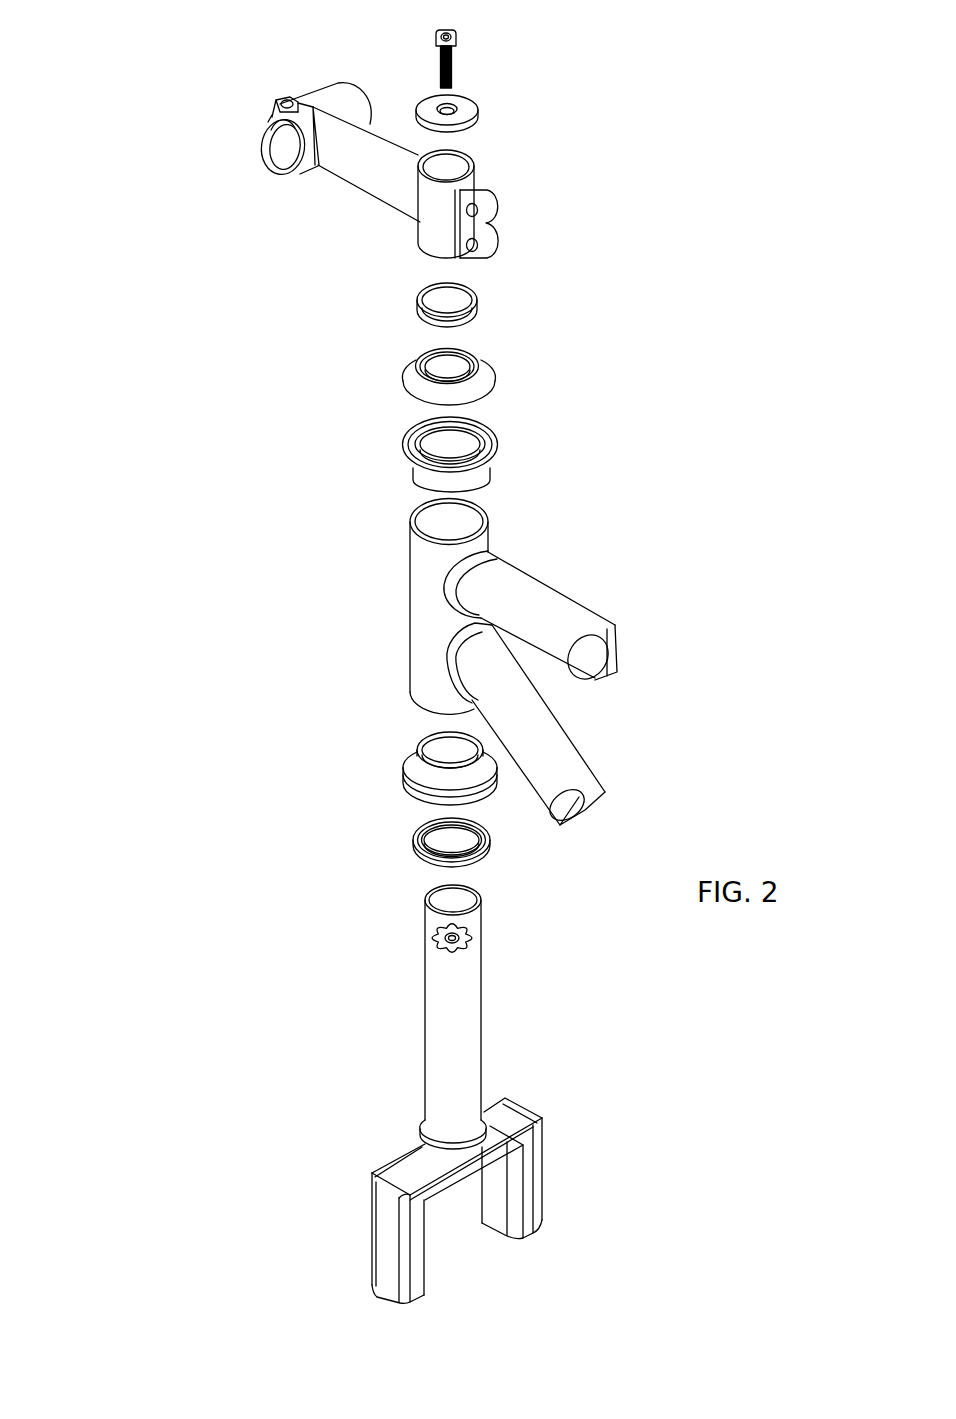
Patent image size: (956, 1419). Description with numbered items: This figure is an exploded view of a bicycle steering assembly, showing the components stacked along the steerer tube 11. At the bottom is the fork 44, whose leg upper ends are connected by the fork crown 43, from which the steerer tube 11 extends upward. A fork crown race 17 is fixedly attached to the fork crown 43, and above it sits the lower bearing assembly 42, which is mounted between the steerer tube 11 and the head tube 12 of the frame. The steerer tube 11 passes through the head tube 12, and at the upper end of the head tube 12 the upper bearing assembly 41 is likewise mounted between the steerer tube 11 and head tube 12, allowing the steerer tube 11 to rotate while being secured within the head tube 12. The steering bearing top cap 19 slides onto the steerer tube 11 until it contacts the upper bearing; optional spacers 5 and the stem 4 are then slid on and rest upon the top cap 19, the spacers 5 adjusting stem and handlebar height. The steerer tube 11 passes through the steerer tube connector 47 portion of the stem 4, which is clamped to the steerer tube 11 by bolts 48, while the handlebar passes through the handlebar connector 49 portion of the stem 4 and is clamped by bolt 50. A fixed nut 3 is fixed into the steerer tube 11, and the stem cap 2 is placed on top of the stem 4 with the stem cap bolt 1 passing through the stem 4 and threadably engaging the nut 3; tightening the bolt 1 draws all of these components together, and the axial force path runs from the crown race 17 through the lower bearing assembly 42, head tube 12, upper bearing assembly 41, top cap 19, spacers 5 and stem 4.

The stem cap bolt 1 is at (441, 52).
The stem cap 2 is at (420, 108).
The fixed nut 3 is at (440, 947).
The stem 4 is at (379, 147).
The spacers 5 is at (413, 308).
The steerer tube 11 is at (447, 1045).
The head tube 12 is at (422, 627).
The fork crown race 17 is at (417, 855).
The steering bearing top cap 19 is at (410, 378).
The upper bearing assembly 41 is at (410, 460).
The lower bearing assembly 42 is at (408, 773).
The fork crown 43 is at (381, 1196).
The fork 44 is at (388, 1240).
The steerer tube connector 47 is at (453, 165).
The bolts 48 is at (473, 228).
The handlebar connector 49 is at (278, 157).
The bolt 50 is at (272, 103).